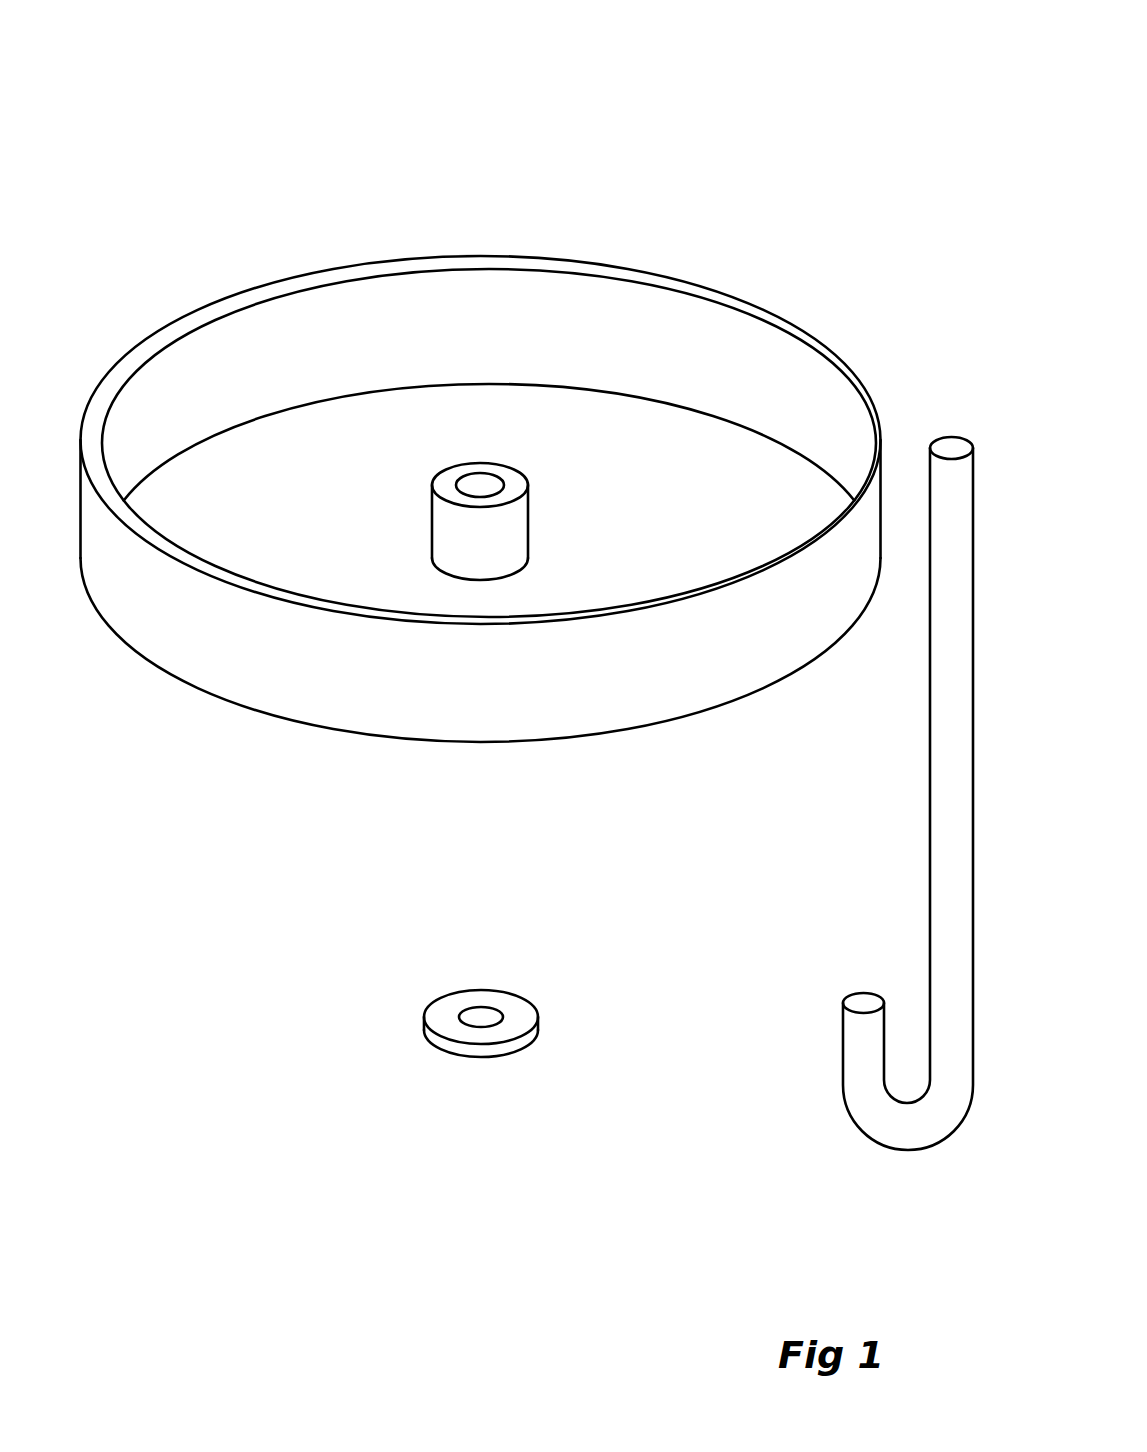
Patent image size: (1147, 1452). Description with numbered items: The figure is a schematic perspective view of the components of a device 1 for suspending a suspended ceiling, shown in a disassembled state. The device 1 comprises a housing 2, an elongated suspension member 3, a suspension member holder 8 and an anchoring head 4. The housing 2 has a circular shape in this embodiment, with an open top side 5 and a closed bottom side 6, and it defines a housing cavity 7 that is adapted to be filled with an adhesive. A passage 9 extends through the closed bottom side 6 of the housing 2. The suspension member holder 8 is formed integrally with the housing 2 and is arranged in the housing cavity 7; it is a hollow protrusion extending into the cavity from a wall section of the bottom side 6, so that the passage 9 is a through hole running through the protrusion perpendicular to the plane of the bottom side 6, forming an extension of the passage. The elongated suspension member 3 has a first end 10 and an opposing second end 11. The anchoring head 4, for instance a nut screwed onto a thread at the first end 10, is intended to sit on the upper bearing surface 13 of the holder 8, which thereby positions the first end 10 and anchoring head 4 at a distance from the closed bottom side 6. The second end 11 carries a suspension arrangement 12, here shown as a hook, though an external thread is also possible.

The device 1 is at (740, 165).
The housing 2 is at (228, 656).
The elongated suspension member 3 is at (847, 759).
The anchoring head 4 is at (442, 1023).
The open top side 5 is at (285, 335).
The closed bottom side 6 is at (618, 748).
The housing cavity 7 is at (267, 493).
The suspension member holder 8 is at (546, 373).
The passage 9 is at (489, 482).
The first end 10 is at (940, 395).
The second end 11 is at (924, 1180).
The suspension arrangement 12 is at (865, 1070).
The upper bearing surface 13 is at (442, 474).